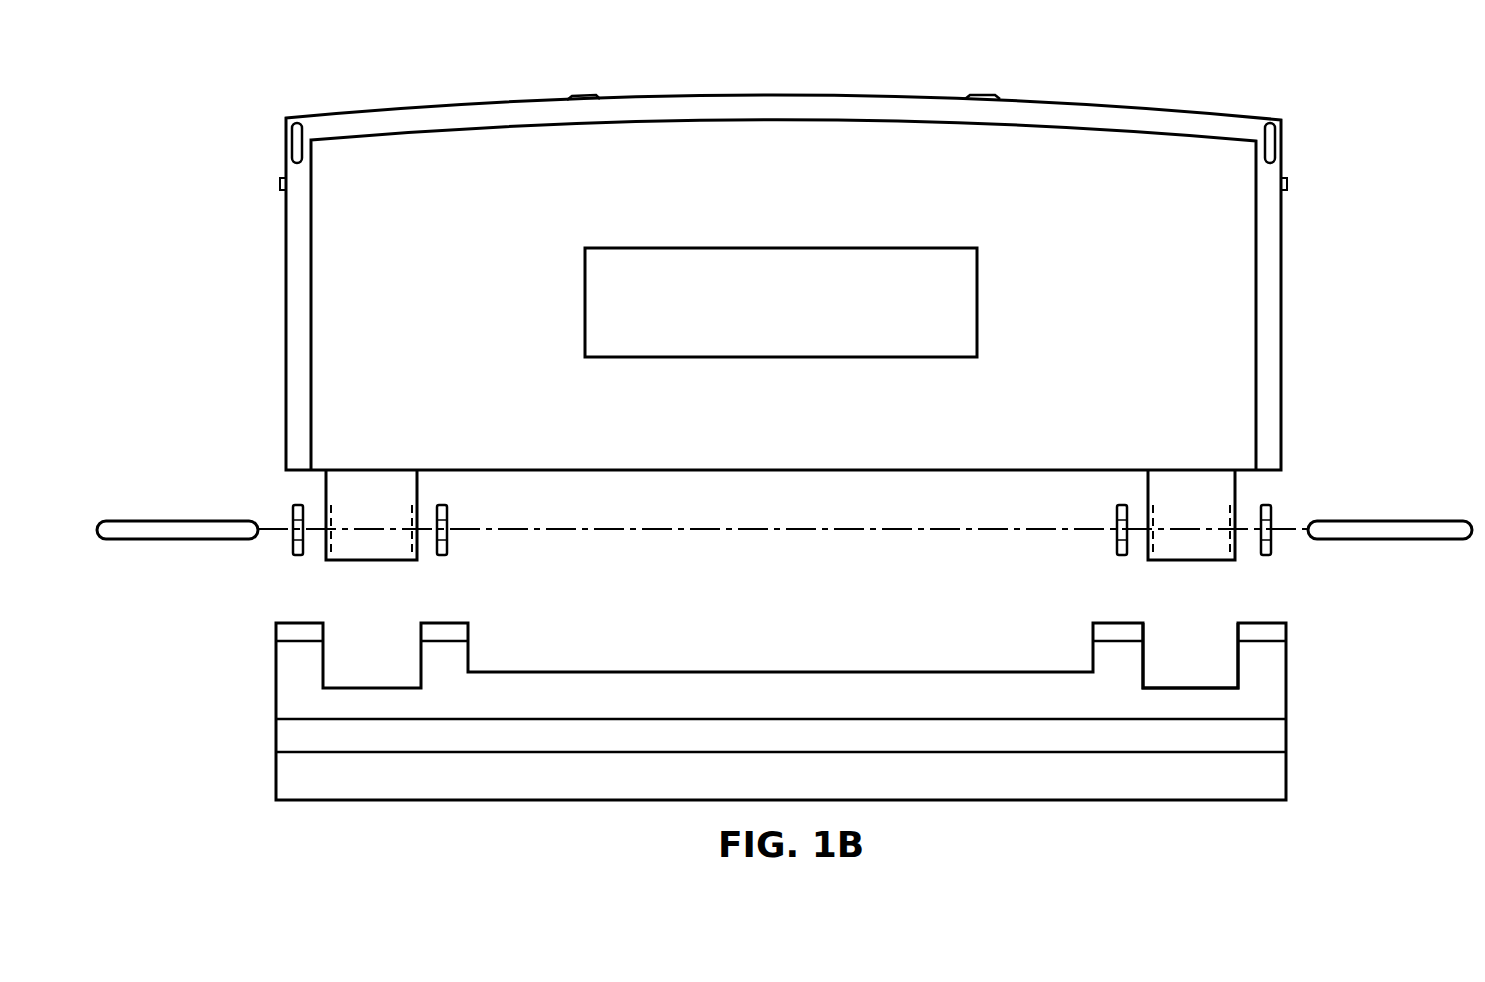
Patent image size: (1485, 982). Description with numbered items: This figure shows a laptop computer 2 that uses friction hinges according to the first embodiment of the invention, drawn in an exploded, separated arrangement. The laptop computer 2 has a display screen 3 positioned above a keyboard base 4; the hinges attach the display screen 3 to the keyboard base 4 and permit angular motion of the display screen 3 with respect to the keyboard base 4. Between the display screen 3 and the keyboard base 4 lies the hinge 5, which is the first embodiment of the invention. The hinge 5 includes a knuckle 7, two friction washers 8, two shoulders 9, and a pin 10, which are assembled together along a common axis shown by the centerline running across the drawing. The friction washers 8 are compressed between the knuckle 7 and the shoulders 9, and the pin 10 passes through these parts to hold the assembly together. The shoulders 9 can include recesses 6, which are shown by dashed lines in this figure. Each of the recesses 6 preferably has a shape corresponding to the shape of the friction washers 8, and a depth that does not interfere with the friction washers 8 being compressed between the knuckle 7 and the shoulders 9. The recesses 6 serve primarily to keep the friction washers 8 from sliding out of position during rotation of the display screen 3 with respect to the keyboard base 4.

The laptop computer 2 is at (238, 161).
The display screen 3 is at (300, 428).
The keyboard base 4 is at (390, 782).
The hinge 5 is at (1291, 513).
The recesses 6 is at (1230, 521).
The knuckle 7 is at (1235, 500).
The friction washers 8 is at (1127, 553).
The shoulders 9 is at (1238, 660).
The pin 10 is at (1425, 530).